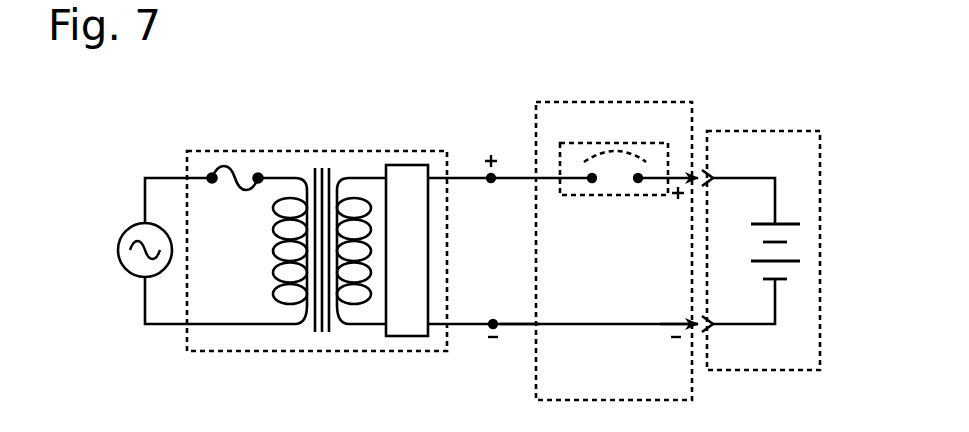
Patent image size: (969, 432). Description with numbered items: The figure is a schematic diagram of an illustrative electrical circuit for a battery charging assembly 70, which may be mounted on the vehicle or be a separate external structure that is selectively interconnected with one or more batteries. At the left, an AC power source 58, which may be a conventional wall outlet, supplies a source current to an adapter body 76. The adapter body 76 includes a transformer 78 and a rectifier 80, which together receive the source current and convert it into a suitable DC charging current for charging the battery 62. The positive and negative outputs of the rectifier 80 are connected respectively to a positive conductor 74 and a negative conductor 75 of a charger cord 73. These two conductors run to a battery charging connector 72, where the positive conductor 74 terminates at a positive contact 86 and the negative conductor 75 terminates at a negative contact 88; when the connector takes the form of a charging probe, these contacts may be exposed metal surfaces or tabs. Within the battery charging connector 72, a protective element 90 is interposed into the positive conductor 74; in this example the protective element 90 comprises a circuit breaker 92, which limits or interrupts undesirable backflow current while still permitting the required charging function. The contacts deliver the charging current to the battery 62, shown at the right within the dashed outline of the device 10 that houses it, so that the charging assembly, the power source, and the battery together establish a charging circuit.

The battery charging assembly 70 is at (272, 55).
The AC power source 58 is at (118, 253).
The adapter body 76 is at (232, 353).
The transformer 78 is at (322, 166).
The rectifier 80 is at (406, 337).
The positive conductor 74 is at (514, 182).
The negative conductor 75 is at (516, 320).
The charger cord 73 is at (520, 329).
The battery charging connector 72 is at (640, 101).
The protective element 90 is at (595, 142).
The circuit breaker 92 is at (618, 152).
The positive contact 86 is at (684, 201).
The negative contact 88 is at (684, 309).
The hearing device 10 is at (821, 157).
The battery 62 is at (803, 241).